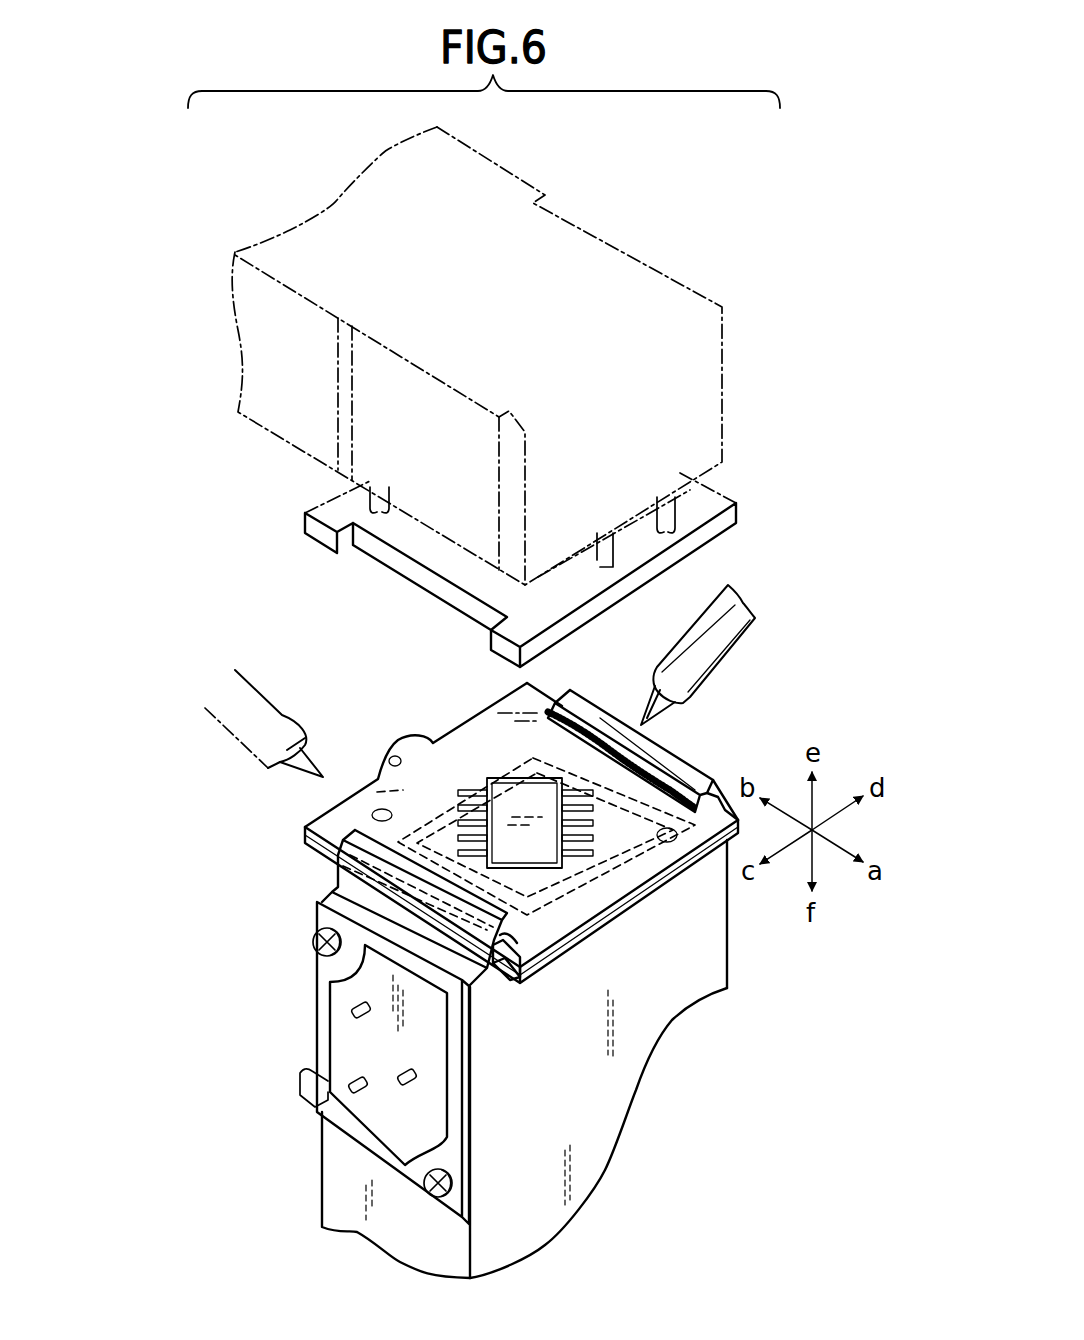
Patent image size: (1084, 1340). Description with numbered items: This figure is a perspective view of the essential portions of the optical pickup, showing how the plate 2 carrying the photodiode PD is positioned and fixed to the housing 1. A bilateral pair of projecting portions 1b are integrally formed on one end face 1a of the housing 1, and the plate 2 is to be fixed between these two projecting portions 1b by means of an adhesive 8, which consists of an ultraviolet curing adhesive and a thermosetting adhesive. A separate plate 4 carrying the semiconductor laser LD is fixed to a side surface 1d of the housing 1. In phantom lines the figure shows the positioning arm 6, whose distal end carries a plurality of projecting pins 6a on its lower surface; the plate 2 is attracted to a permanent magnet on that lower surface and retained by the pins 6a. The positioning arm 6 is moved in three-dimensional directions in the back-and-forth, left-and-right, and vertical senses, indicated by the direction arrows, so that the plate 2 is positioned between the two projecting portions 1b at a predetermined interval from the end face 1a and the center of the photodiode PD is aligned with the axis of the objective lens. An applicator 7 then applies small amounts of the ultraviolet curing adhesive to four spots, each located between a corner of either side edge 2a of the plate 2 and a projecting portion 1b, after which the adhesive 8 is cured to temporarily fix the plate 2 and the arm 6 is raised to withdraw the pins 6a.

The housing 1 is at (316, 1189).
The end face 1a is at (633, 910).
The projecting portions 1b is at (338, 873).
The side surface 1d is at (480, 1238).
The plate 2 is at (440, 616).
The side edge 2a is at (553, 733).
The plate 4 is at (457, 1093).
The positioning arm 6 is at (560, 241).
The pins 6a is at (380, 484).
The applicator 7 is at (278, 720).
The adhesive 8 is at (620, 748).
The photodiode PD is at (532, 848).
The semiconductor laser LD is at (350, 1028).